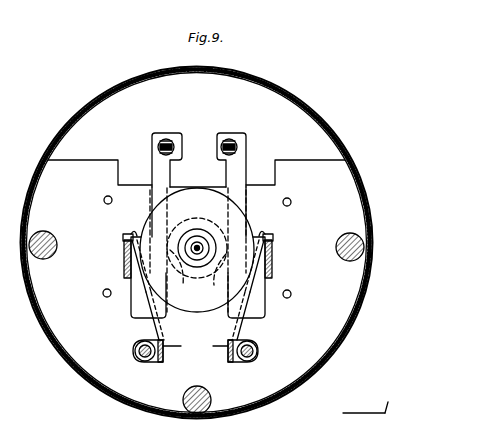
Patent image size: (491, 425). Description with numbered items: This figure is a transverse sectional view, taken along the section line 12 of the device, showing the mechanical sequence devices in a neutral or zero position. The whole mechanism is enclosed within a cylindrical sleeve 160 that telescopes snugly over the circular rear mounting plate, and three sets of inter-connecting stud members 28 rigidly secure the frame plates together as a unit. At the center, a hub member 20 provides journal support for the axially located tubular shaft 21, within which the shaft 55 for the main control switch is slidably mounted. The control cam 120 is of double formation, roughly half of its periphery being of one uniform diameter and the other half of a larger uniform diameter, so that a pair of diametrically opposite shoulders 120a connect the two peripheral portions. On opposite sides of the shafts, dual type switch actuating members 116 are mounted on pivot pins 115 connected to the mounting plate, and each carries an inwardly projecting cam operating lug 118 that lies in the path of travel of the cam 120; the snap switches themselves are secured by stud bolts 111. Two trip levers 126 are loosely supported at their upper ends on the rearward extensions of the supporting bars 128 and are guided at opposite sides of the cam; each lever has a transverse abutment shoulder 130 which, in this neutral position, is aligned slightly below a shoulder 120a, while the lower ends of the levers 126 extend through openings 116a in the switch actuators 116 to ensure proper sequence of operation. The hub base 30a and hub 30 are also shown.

The cylindrical sleeve 160 is at (119, 88).
The hub member 20 is at (97, 364).
The trip levers 126 is at (155, 170).
The supporting bars 128 is at (164, 139).
The section line 12 is at (245, 116).
The stud members 28 is at (50, 228).
The stud bolts 111 is at (292, 203).
The hub 30 is at (201, 233).
The tubular shaft 21 is at (193, 246).
The shaft 55 is at (200, 253).
The hub base 30a is at (198, 262).
The abutment shoulder 130 is at (198, 277).
The shoulders 120a is at (124, 266).
The control cam 120 is at (268, 234).
The cam operating lug 118 is at (132, 234).
The switch actuating members 116 is at (128, 252).
The openings 116a is at (154, 328).
The pivot pins 115 is at (195, 351).